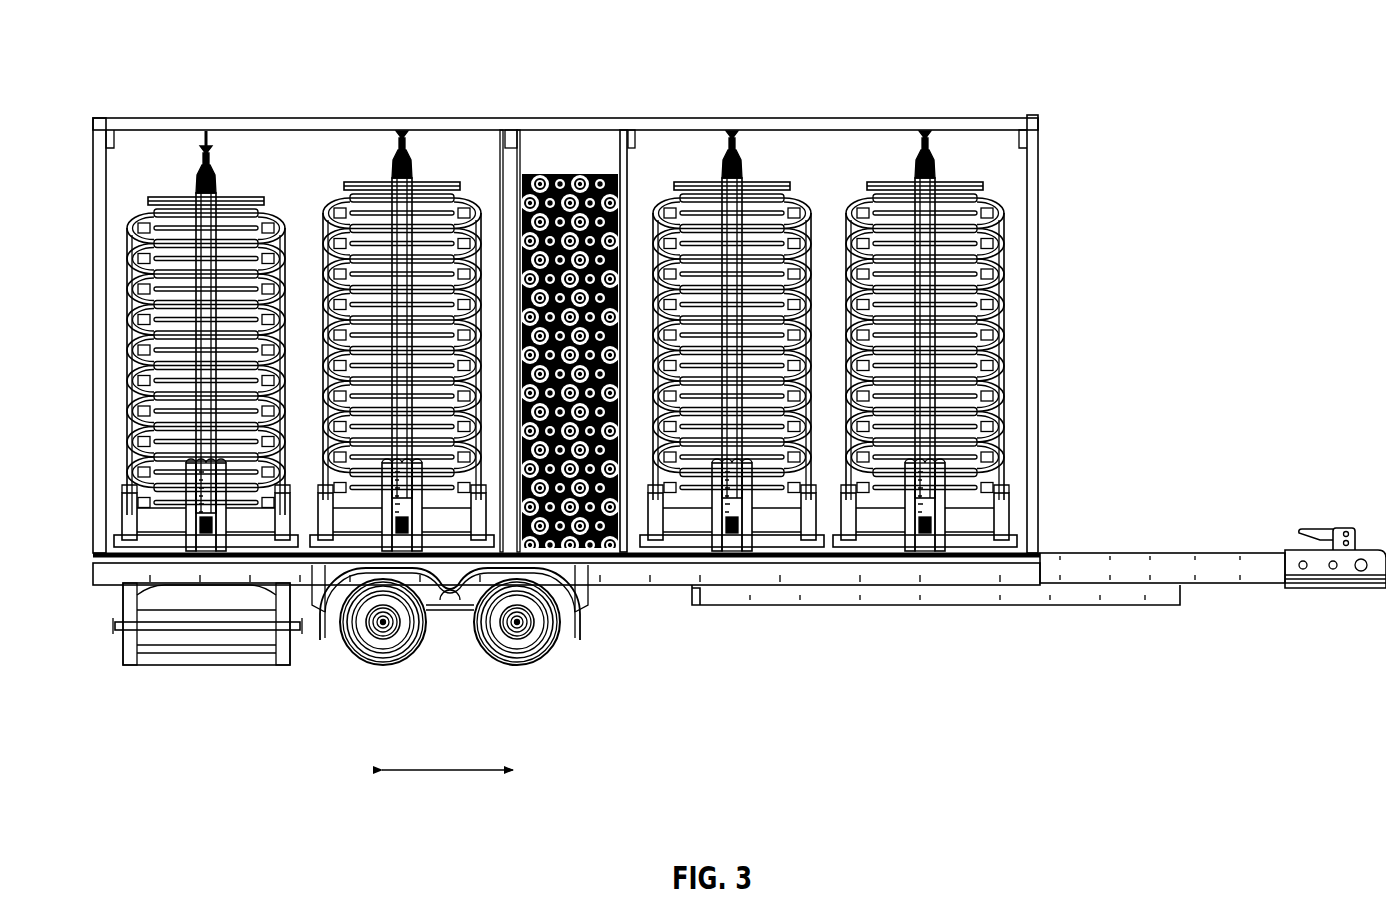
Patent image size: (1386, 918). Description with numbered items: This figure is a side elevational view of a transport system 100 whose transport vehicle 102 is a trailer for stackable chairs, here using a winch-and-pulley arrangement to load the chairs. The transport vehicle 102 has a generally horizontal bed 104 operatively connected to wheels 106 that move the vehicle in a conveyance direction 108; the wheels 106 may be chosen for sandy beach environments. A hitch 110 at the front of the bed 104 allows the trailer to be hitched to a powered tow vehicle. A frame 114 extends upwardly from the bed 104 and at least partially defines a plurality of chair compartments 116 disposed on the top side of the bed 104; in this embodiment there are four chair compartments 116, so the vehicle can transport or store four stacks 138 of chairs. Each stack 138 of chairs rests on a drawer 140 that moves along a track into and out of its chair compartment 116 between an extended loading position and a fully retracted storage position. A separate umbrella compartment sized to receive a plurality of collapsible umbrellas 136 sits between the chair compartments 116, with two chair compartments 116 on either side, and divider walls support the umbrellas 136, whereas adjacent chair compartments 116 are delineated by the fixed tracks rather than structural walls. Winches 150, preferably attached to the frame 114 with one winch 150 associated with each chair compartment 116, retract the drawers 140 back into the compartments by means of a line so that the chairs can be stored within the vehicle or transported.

The transport system 100 is at (126, 70).
The transport vehicle 102 is at (1062, 160).
The bed 104 is at (95, 565).
The wheels 106 is at (385, 667).
The conveyance direction 108 is at (447, 772).
The hitch 110 is at (1342, 585).
The frame 114 is at (135, 118).
The chair compartments 116 is at (234, 162).
The collapsible umbrellas 136 is at (600, 174).
The stacks 138 is at (159, 192).
The drawers 140 is at (123, 648).
The winches 150 is at (725, 505).